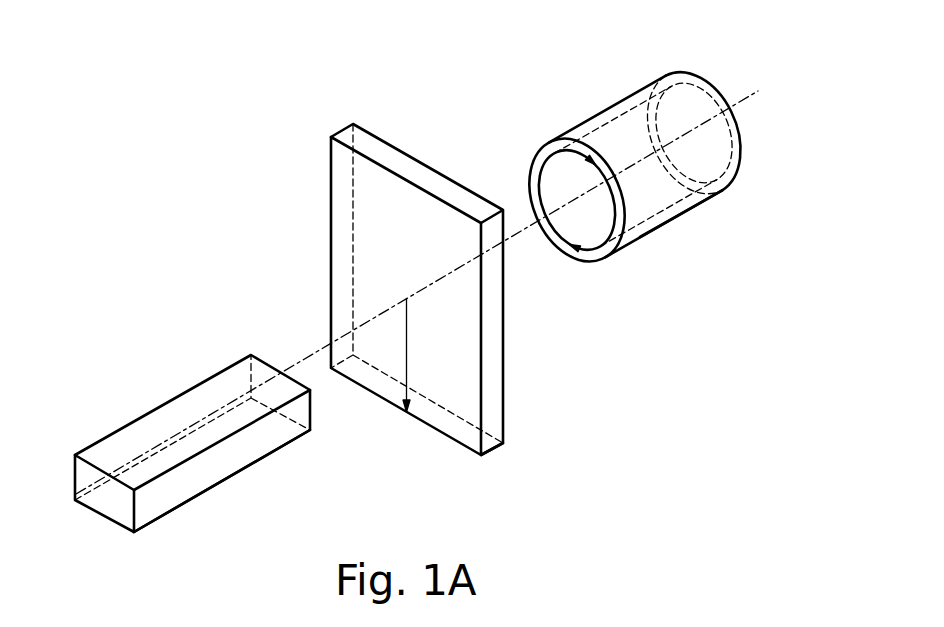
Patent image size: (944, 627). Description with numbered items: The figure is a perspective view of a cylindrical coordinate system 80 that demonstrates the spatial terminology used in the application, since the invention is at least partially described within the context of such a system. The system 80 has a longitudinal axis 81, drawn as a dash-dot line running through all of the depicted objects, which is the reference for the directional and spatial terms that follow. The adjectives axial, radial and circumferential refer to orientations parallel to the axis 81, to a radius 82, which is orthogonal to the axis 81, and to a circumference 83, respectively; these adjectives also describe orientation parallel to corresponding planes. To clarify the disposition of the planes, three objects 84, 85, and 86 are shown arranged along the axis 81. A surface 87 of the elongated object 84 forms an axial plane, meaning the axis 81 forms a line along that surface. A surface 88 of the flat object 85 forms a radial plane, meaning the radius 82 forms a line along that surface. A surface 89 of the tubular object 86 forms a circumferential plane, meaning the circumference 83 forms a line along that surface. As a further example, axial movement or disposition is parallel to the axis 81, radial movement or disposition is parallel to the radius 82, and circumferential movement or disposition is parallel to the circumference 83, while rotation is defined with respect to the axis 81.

The cylindrical coordinate system 80 is at (308, 185).
The longitudinal axis 81 is at (743, 100).
The radius 82 is at (407, 362).
The circumference 83 is at (527, 163).
The object 84 is at (182, 508).
The object 85 is at (512, 448).
The object 86 is at (673, 223).
The surface 87 is at (152, 410).
The surface 88 is at (337, 275).
The surface 89 is at (607, 107).